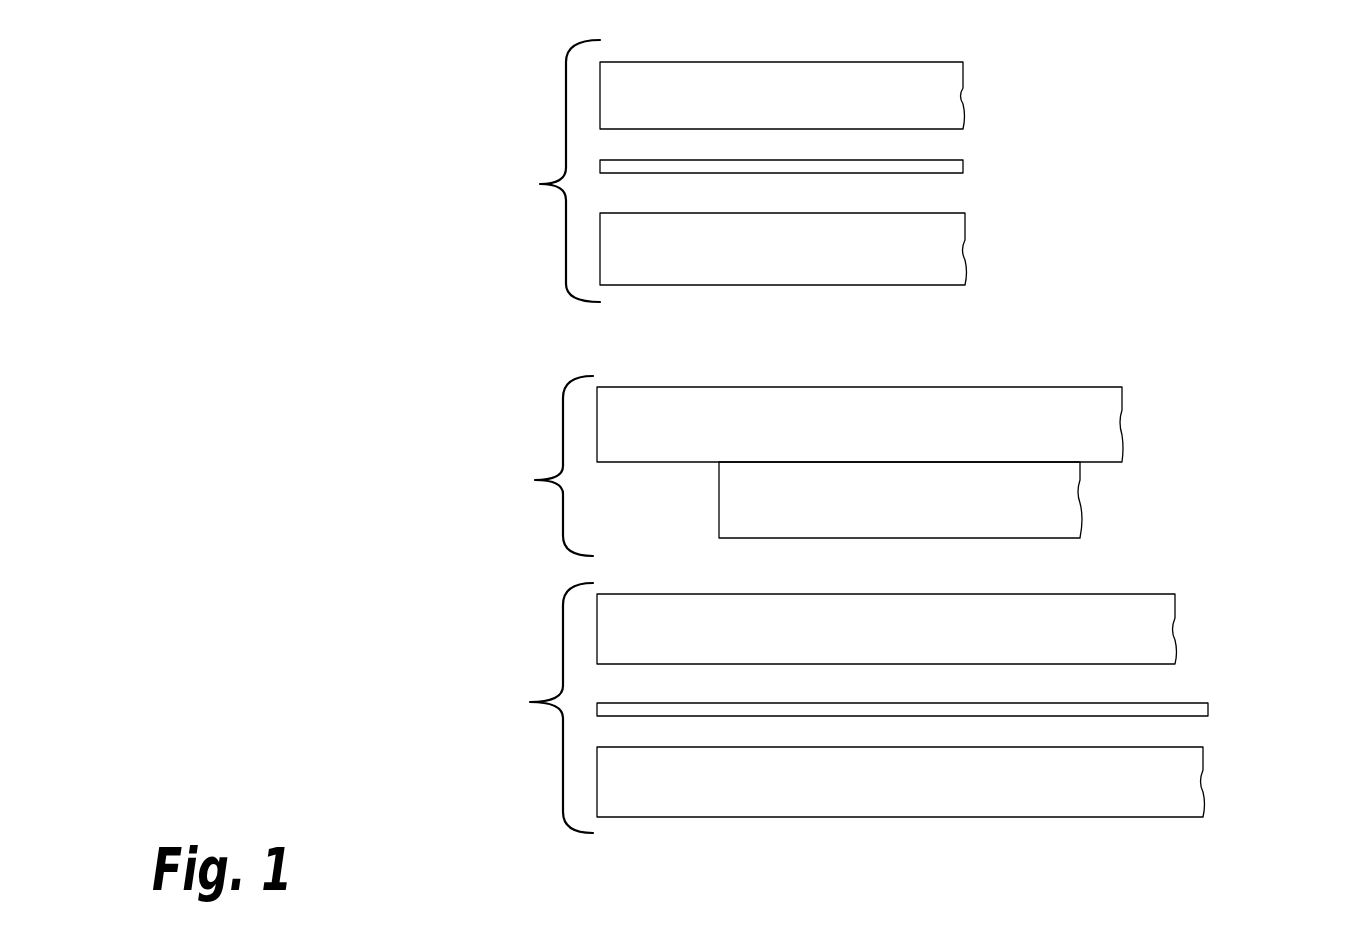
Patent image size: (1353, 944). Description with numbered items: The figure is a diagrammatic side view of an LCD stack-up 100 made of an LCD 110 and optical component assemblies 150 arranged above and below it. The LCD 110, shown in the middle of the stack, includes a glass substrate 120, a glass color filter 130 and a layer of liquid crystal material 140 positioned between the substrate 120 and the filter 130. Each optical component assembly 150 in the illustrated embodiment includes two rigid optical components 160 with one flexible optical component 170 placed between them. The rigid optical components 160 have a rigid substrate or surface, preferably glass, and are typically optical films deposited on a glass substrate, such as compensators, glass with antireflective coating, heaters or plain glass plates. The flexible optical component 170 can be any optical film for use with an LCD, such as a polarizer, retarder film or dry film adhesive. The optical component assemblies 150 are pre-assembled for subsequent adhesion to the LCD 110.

The LCD stack-up 100 is at (276, 171).
The LCD 110 is at (869, 466).
The glass substrate 120 is at (1122, 415).
The glass color filter 130 is at (1072, 512).
The layer of liquid crystal material 140 is at (1062, 456).
The optical component assembly 150 is at (787, 171).
The rigid optical component 160 is at (960, 91).
The flexible optical component 170 is at (963, 166).